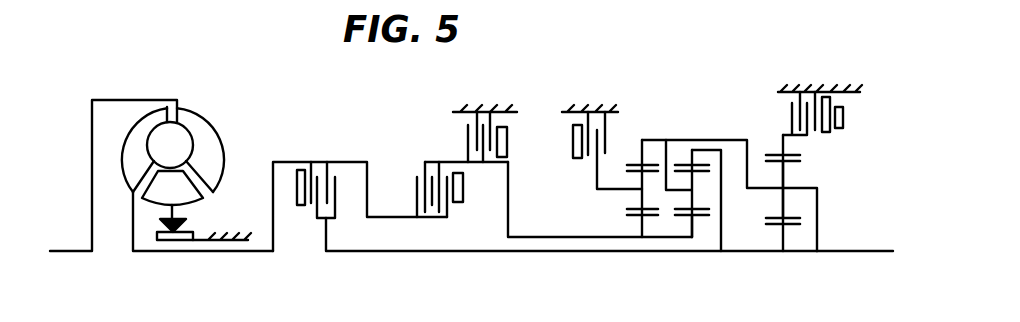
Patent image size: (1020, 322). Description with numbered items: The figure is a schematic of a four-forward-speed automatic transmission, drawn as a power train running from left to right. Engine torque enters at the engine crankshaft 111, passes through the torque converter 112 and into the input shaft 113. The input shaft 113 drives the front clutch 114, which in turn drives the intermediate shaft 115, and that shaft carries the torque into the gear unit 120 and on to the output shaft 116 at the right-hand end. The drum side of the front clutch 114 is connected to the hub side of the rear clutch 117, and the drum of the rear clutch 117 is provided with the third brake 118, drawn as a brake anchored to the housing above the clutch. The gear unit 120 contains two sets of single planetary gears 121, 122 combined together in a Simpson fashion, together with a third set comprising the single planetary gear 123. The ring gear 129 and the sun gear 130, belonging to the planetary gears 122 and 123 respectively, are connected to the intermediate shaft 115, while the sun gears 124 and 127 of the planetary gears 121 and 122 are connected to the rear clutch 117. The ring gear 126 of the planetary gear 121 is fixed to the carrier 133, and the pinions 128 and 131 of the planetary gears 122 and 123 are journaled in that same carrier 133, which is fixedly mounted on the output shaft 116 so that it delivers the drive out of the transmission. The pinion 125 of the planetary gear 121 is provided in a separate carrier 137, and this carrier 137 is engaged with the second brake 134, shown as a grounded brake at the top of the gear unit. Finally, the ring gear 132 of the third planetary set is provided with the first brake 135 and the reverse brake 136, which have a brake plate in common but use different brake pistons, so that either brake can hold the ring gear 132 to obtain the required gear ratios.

The engine crankshaft 111 is at (57, 253).
The torque converter 112 is at (199, 125).
The input shaft 113 is at (195, 253).
The front clutch 114 is at (312, 170).
The intermediate shaft 115 is at (403, 253).
The output shaft 116 is at (862, 248).
The rear clutch 117 is at (423, 174).
The third brake 118 is at (481, 118).
The gear unit 120 is at (704, 138).
The single planetary gear 121 is at (640, 239).
The single planetary gear 122 is at (691, 239).
The single planetary gear 123 is at (781, 250).
The sun gear 124 is at (626, 215).
The pinion 125 is at (628, 172).
The ring gear 126 is at (642, 138).
The sun gear 127 is at (694, 226).
The pinion 128 is at (694, 198).
The ring gear 129 is at (689, 160).
The sun gear 130 is at (786, 230).
The pinion 131 is at (786, 177).
The ring gear 132 is at (786, 146).
The carrier 133 is at (721, 138).
The second brake 134 is at (588, 113).
The first brake 135 is at (821, 90).
The reverse brake 136 is at (845, 112).
The carrier 137 is at (596, 184).